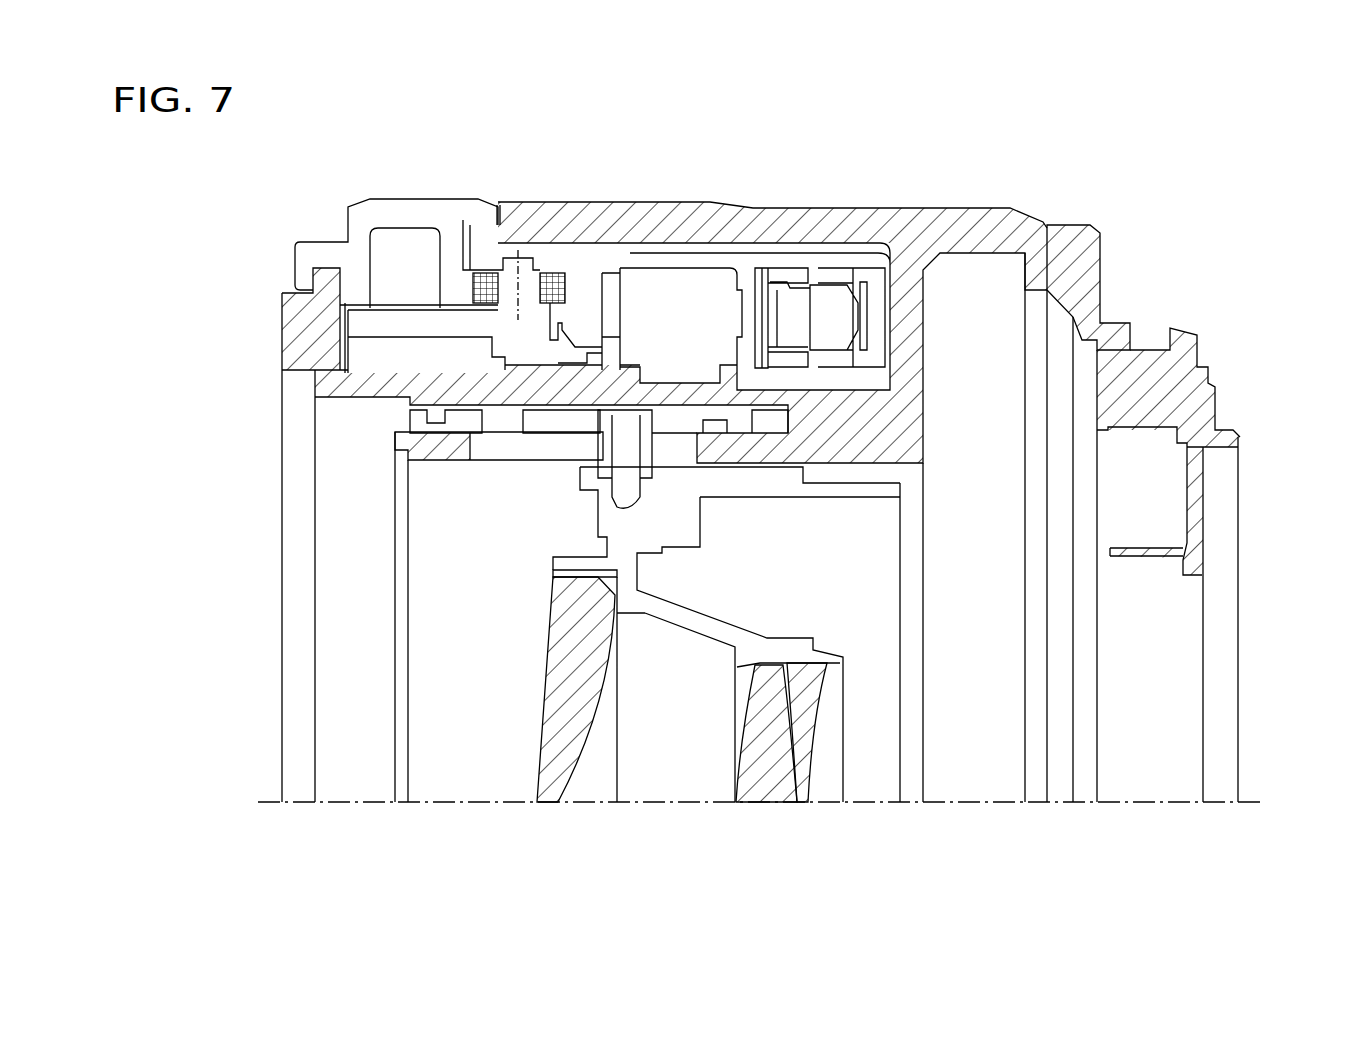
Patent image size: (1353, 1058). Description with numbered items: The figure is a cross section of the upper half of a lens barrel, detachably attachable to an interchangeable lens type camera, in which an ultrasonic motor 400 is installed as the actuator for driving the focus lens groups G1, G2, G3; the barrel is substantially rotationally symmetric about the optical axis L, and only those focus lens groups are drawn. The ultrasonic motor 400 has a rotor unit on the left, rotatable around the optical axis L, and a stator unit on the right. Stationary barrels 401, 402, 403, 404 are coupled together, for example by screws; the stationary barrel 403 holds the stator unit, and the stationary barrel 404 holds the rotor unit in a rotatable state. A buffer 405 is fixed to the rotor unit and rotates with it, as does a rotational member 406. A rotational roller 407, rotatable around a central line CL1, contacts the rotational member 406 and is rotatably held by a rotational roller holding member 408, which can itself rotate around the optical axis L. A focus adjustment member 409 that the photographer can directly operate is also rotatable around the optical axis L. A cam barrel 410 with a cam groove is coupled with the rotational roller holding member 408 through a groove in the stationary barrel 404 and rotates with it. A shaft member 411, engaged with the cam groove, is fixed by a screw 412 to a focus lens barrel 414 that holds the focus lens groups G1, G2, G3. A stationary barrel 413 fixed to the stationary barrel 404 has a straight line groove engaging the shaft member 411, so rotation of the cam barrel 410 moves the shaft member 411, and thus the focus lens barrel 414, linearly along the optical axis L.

The ultrasonic motor 400 is at (762, 255).
The stationary barrel 401 is at (1210, 400).
The stationary barrel 402 is at (1080, 226).
The stationary barrel 403 is at (697, 210).
The stationary barrel 404 is at (297, 315).
The buffer 405 is at (614, 262).
The rotational member 406 is at (600, 278).
The rotational roller 407 is at (547, 273).
The rotational roller holding member 408 is at (517, 225).
The focus adjustment member 409 is at (415, 202).
The cam barrel 410 is at (563, 425).
The shaft member 411 is at (600, 482).
The screw 412 is at (598, 492).
The stationary barrel 413 is at (433, 461).
The focus lens barrel 414 is at (555, 568).
The central line CL1 is at (522, 308).
The focus lens group G1 is at (555, 670).
The focus lens group G2 is at (757, 727).
The focus lens group G3 is at (820, 718).
The optical axis L is at (365, 806).